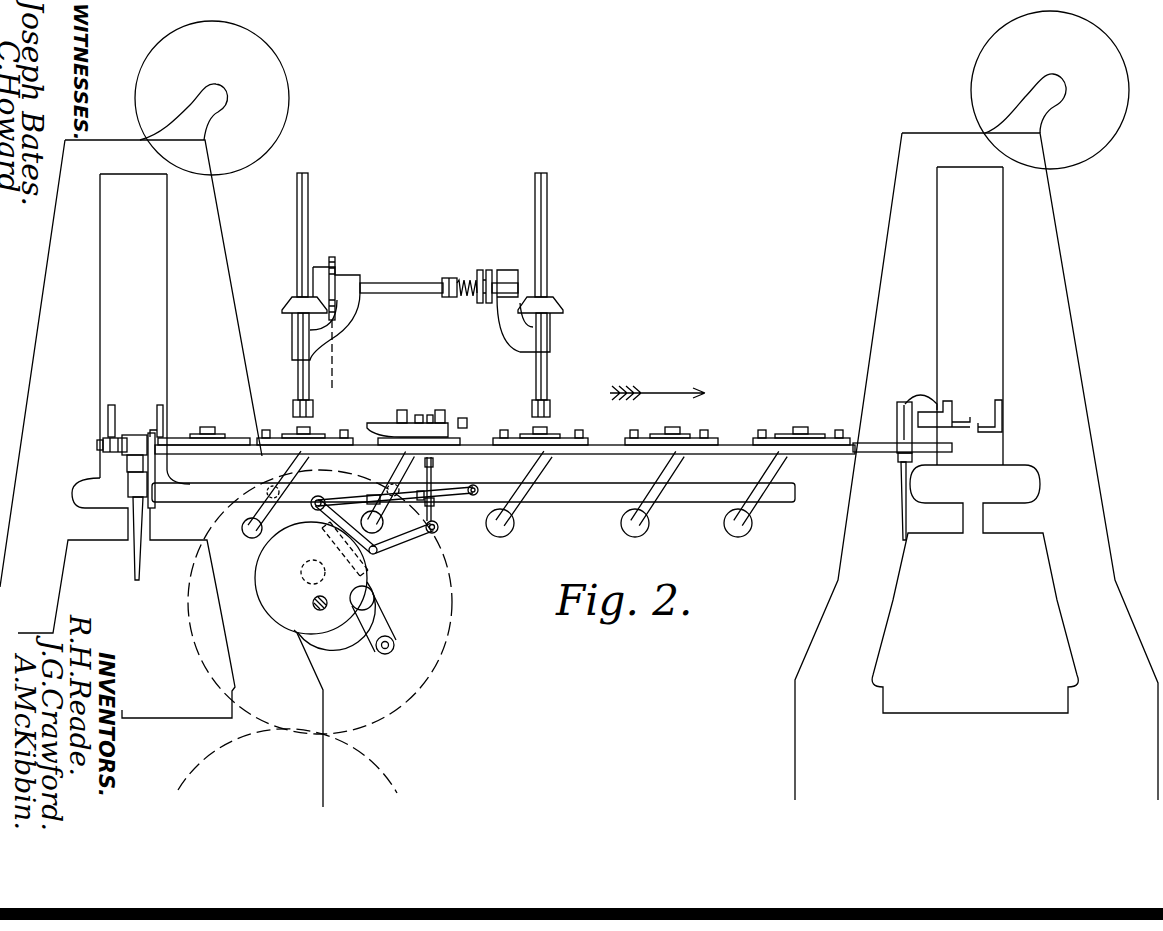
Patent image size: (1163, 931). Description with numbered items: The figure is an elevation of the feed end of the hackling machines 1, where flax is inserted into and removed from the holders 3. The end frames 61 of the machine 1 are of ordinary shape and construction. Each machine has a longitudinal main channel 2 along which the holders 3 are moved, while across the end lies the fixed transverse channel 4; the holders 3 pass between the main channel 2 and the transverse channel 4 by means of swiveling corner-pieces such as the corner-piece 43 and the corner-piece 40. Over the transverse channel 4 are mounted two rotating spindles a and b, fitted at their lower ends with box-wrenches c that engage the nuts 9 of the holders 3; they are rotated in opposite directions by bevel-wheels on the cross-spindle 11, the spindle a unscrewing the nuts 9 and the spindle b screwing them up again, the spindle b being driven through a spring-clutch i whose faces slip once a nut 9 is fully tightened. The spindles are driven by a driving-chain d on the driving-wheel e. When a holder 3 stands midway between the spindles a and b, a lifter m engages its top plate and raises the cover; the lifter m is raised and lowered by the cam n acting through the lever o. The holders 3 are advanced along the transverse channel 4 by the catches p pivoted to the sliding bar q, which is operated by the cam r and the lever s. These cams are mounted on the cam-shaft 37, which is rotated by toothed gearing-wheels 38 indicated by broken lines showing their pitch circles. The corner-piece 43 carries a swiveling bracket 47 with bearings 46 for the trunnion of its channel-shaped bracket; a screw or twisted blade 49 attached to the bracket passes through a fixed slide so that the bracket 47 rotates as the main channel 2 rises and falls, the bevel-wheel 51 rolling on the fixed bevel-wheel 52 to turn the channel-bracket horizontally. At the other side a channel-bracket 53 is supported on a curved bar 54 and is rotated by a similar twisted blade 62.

The machine 1 is at (551, 322).
The main channel 2 is at (555, 415).
The holder 3 is at (333, 438).
The transverse channel 4 is at (487, 478).
The nut 9 is at (685, 425).
The cross-spindle 11 is at (439, 302).
The cam-shaft 37 is at (315, 614).
The toothed gearing-wheel 38 is at (315, 631).
The swiveling corner-piece 40 is at (913, 448).
The swiveling corner-piece 43 is at (170, 458).
The bearing 46 is at (105, 440).
The swiveling bracket 47 is at (118, 467).
The screw or twisted blade 49 is at (158, 538).
The bevel-wheel 51 is at (133, 434).
The bevel-wheel 52 is at (107, 458).
The channel-bracket 53 is at (887, 447).
The curved bar 54 is at (905, 404).
The end frame 61 is at (579, 409).
The screw or twisted blade 62 is at (906, 537).
The rotating spindle a is at (307, 286).
The rotating spindle b is at (545, 286).
The box-wrench c is at (411, 405).
The driving-chain d is at (344, 355).
The driving-wheel e is at (341, 285).
The spring-clutch i is at (484, 273).
The lifter m is at (385, 423).
The cam n is at (347, 620).
The lever o is at (402, 542).
The catch p is at (235, 548).
The sliding bar q is at (530, 503).
The cam r is at (311, 578).
The lever s is at (394, 530).